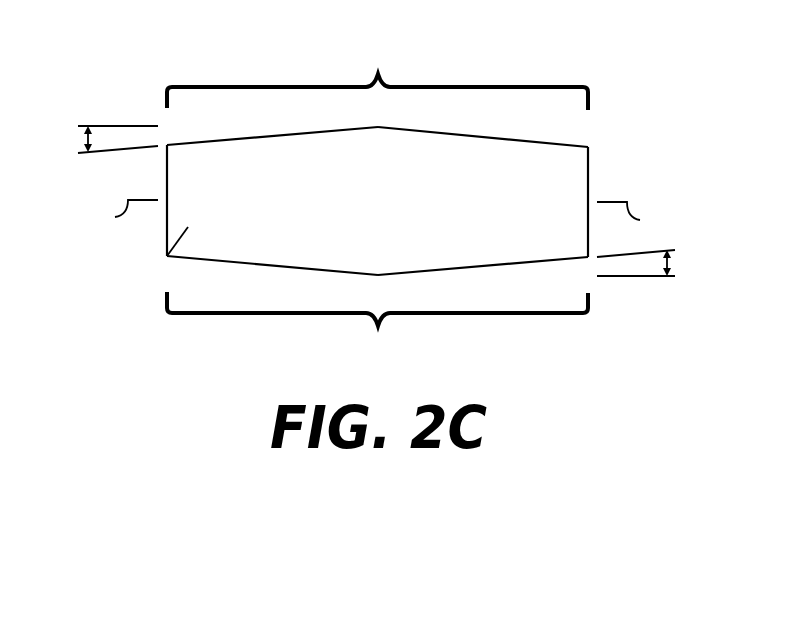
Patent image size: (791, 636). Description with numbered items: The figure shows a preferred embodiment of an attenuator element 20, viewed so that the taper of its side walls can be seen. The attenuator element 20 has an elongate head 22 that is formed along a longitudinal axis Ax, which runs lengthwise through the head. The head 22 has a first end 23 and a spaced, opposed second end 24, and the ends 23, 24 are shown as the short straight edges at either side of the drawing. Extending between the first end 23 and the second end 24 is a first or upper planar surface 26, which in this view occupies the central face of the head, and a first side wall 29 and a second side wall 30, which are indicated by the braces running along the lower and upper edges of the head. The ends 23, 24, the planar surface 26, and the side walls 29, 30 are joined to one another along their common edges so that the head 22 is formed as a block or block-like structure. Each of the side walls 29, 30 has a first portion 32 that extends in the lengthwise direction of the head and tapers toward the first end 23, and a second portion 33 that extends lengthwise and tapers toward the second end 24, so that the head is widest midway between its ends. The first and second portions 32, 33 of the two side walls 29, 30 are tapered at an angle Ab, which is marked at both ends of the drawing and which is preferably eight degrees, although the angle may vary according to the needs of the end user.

The attenuator element 20 is at (380, 154).
The elongate head 22 is at (167, 256).
The first end 23 is at (167, 170).
The second end 24 is at (588, 173).
The first or upper planar surface 26 is at (380, 199).
The first side wall 29 is at (377, 327).
The second side wall 30 is at (377, 74).
The first portion 32 is at (242, 138).
The second portion 33 is at (512, 139).
The taper angle Ab is at (78, 141).
The longitudinal axis Ax is at (378, 215).